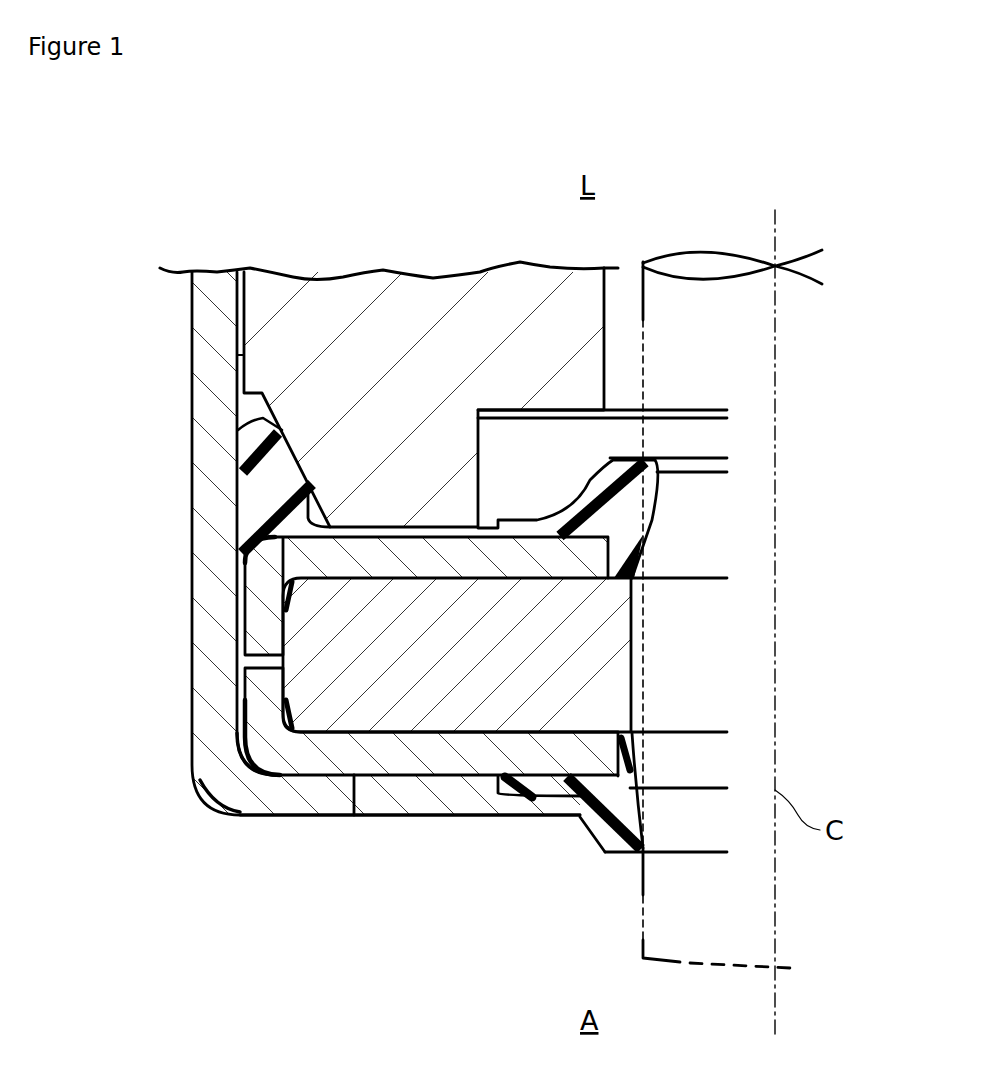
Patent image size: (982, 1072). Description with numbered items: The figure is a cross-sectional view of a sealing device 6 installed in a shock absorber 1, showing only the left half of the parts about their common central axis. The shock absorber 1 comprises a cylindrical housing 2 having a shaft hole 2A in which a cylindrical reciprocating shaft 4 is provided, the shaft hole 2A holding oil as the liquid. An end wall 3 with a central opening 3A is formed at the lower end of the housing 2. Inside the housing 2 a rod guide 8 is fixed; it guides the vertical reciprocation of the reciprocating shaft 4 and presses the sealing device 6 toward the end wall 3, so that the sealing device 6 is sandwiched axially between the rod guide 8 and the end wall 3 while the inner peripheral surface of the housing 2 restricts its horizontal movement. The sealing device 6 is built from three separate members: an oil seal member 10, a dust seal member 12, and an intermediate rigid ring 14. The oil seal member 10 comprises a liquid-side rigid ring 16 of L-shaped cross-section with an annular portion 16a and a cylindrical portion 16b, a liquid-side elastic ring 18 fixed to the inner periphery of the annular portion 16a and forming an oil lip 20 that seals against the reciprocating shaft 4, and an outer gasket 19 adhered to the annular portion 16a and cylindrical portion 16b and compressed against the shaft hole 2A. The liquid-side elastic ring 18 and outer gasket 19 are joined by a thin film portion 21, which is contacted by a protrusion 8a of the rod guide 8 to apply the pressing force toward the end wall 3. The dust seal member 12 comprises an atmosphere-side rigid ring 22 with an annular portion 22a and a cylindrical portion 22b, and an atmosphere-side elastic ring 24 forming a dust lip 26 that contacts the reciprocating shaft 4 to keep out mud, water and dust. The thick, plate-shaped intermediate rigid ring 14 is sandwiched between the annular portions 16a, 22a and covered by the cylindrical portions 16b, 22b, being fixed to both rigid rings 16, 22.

The shock absorber 1 is at (222, 913).
The housing 2 is at (192, 533).
The shaft hole 2A is at (240, 355).
The end wall 3 is at (305, 805).
The opening 3A is at (354, 800).
The reciprocating shaft 4 is at (640, 940).
The sealing device 6 is at (218, 637).
The rod guide 8 is at (433, 295).
The protrusion 8a is at (478, 462).
The oil seal member 10 is at (642, 528).
The dust seal member 12 is at (628, 805).
The intermediate rigid ring 14 is at (613, 672).
The liquid-side rigid ring 16 is at (243, 568).
The annular portion 16a is at (407, 543).
The cylindrical portion 16b is at (243, 613).
The liquid-side elastic ring 18 is at (567, 512).
The outer gasket 19 is at (243, 486).
The oil lip 20 is at (657, 487).
The thin film portion 21 is at (360, 528).
The atmosphere-side rigid ring 22 is at (243, 685).
The annular portion 22a is at (427, 787).
The cylindrical portion 22b is at (243, 727).
The atmosphere-side elastic ring 24 is at (557, 792).
The dust lip 26 is at (650, 827).